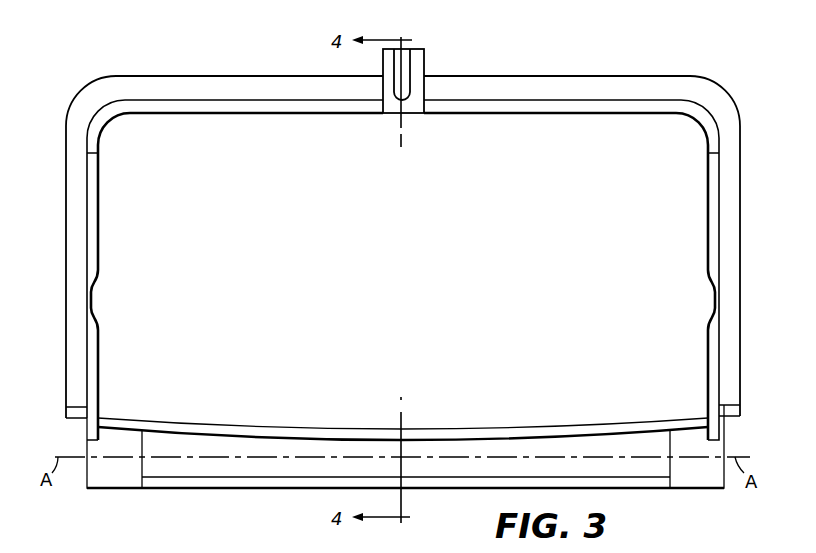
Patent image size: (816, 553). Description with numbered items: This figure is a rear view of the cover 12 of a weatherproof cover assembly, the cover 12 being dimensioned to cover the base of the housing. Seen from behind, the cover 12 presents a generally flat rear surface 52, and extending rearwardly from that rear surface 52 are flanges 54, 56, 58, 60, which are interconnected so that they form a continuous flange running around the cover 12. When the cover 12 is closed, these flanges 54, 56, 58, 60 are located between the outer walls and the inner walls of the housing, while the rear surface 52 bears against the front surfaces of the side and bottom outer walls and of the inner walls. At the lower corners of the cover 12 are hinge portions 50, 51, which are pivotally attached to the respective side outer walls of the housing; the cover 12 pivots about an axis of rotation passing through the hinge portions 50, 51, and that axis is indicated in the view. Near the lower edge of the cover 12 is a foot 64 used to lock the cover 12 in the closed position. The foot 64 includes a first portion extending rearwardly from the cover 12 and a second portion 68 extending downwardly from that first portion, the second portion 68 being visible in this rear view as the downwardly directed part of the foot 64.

The cover 12 is at (212, 60).
The hinge portion 50 is at (125, 478).
The hinge portion 51 is at (687, 477).
The rear surface 52 is at (210, 99).
The flange 54 is at (297, 112).
The flange 56 is at (102, 373).
The flange 58 is at (707, 205).
The flange 60 is at (536, 423).
The foot 64 is at (429, 41).
The second portion 68 is at (425, 62).